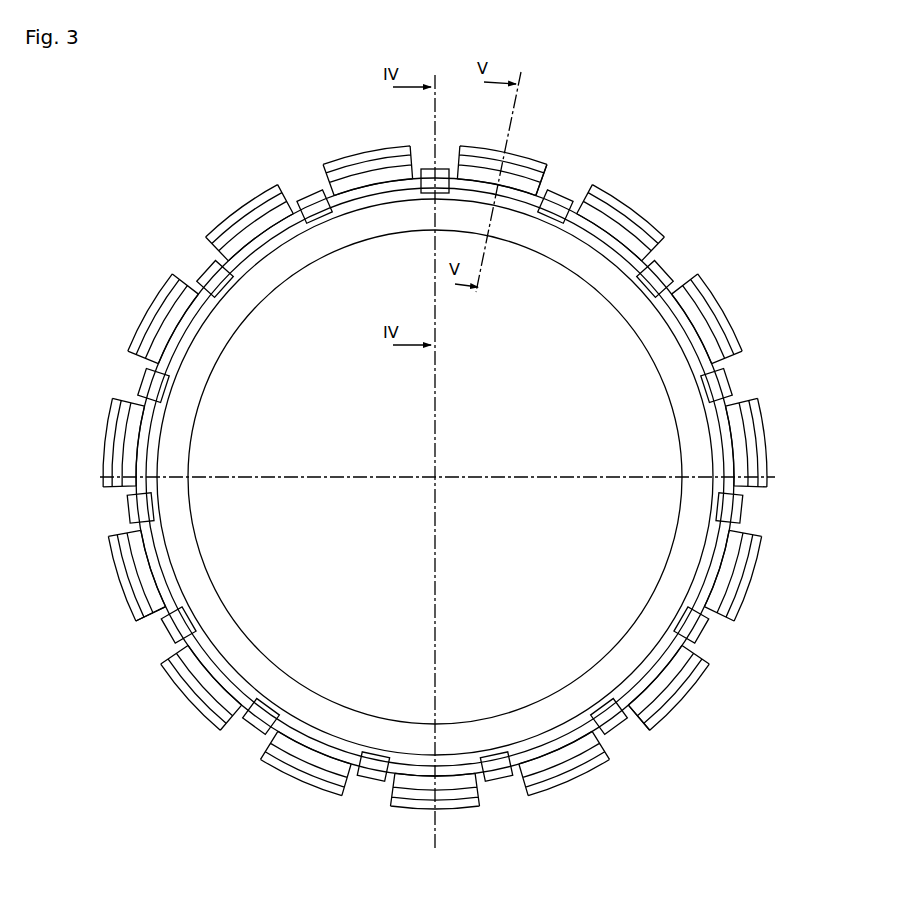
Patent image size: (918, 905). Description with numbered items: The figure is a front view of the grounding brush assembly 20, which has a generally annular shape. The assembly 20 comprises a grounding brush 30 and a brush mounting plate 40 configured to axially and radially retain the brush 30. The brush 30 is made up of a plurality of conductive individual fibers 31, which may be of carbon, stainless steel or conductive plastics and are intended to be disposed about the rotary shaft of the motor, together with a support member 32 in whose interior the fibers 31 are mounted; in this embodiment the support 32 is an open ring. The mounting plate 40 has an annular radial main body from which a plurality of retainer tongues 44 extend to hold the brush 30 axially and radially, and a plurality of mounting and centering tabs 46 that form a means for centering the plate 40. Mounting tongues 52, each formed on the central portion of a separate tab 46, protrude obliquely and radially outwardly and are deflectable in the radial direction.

The grounding brush assembly 20 is at (476, 465).
The grounding brush 30 is at (698, 540).
The conductive individual fibers 31 is at (566, 713).
The support member 32 is at (295, 734).
The brush mounting plate 40 is at (658, 214).
The retainer tongues 44 is at (438, 167).
The mounting and centering tabs 46 is at (505, 151).
The mounting tongues 52 is at (495, 168).